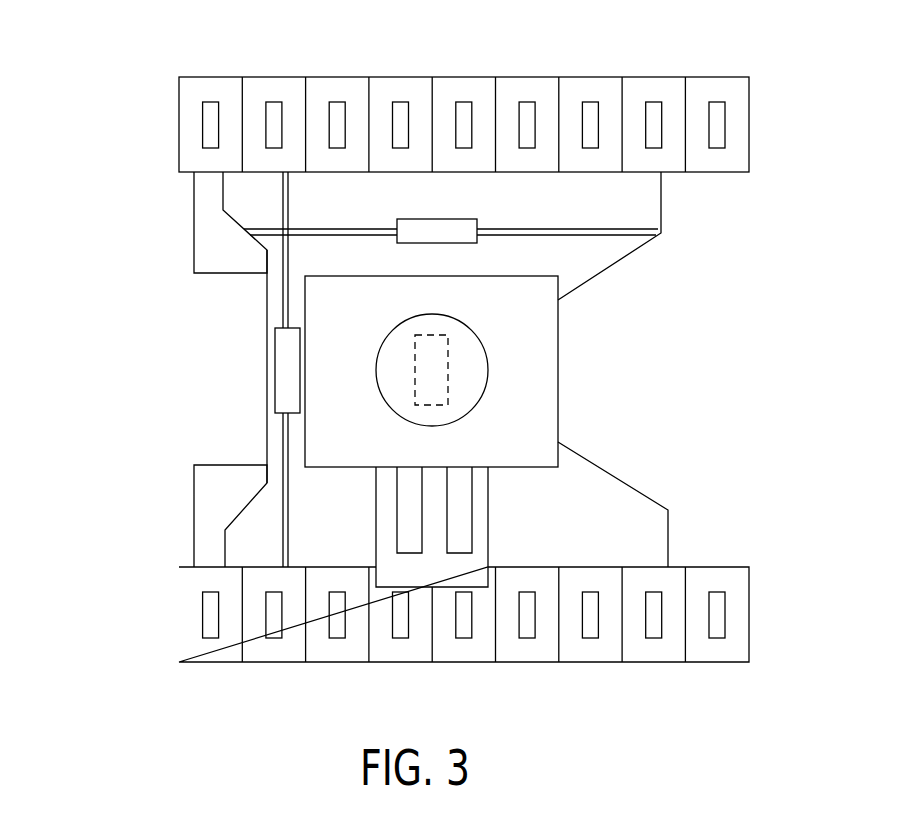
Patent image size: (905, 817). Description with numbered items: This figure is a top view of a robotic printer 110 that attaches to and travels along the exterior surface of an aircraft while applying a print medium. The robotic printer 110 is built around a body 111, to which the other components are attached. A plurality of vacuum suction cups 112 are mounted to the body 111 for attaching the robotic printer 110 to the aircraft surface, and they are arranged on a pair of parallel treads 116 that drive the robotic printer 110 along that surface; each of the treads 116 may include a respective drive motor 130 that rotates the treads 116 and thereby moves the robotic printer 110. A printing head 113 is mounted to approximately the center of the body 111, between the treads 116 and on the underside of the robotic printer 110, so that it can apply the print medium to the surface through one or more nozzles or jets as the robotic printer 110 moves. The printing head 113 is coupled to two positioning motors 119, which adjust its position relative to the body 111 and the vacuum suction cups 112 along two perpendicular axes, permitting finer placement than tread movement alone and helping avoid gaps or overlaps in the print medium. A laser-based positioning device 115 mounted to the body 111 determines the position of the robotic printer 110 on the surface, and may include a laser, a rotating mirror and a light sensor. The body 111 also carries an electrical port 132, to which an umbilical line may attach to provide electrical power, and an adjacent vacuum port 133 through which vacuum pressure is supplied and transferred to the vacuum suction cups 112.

The robotic printer 110 is at (115, 567).
The body 111 is at (558, 387).
The vacuum suction cups 112 is at (527, 102).
The printing head 113 is at (415, 396).
The laser-based positioning device 115 is at (488, 372).
The parallel treads 116 is at (749, 142).
The positioning motors 119 is at (443, 220).
The drive motor 130 is at (194, 252).
The electrical port 132 is at (397, 540).
The vacuum port 133 is at (472, 522).